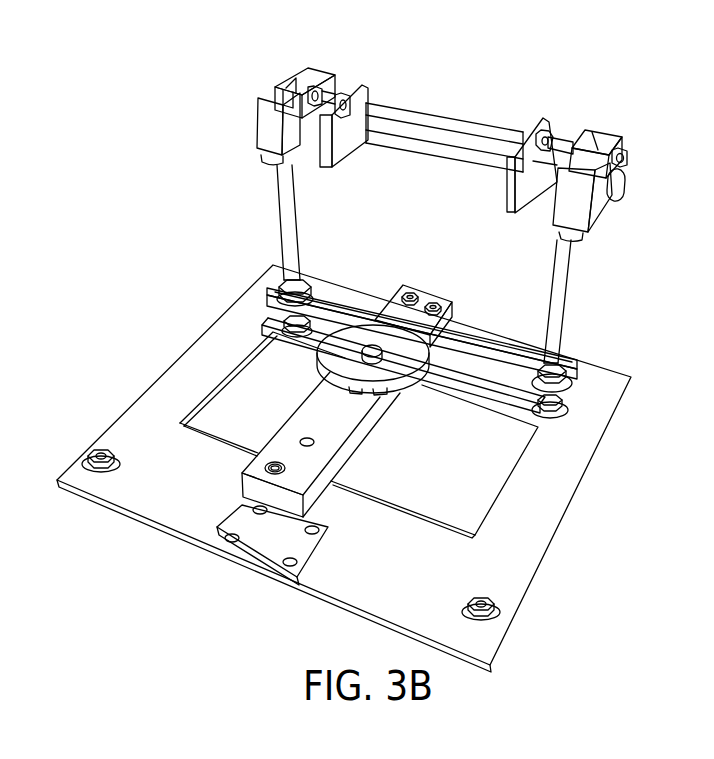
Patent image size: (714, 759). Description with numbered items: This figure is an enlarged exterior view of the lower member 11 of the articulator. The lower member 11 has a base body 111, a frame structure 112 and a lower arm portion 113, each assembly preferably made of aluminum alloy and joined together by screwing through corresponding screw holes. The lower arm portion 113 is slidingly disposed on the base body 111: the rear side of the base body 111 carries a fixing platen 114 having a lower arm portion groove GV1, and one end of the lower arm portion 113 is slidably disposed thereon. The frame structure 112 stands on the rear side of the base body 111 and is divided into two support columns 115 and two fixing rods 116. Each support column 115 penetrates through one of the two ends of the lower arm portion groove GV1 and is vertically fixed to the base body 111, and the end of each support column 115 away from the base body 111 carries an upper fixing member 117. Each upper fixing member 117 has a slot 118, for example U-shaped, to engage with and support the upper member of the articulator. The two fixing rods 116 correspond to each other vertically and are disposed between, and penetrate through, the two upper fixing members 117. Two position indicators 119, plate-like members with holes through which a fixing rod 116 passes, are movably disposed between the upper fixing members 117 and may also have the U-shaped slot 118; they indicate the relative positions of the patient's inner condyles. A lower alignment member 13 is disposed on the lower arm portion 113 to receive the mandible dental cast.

The lower member 11 is at (324, 468).
The base body 111 is at (515, 561).
The frame structure 112 is at (582, 300).
The lower arm portion 113 is at (305, 420).
The fixing platen 114 is at (508, 333).
The support column 115 is at (283, 182).
The fixing rod 116 is at (454, 147).
The upper fixing member 117 is at (270, 134).
The slot 118 is at (277, 78).
The position indicator 119 is at (345, 148).
The lower alignment member 13 is at (400, 390).
The lower arm portion groove GV1 is at (470, 341).